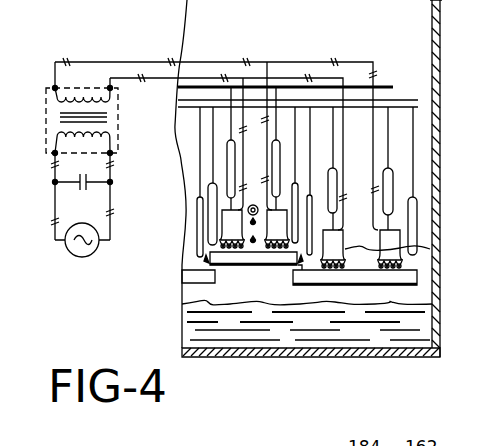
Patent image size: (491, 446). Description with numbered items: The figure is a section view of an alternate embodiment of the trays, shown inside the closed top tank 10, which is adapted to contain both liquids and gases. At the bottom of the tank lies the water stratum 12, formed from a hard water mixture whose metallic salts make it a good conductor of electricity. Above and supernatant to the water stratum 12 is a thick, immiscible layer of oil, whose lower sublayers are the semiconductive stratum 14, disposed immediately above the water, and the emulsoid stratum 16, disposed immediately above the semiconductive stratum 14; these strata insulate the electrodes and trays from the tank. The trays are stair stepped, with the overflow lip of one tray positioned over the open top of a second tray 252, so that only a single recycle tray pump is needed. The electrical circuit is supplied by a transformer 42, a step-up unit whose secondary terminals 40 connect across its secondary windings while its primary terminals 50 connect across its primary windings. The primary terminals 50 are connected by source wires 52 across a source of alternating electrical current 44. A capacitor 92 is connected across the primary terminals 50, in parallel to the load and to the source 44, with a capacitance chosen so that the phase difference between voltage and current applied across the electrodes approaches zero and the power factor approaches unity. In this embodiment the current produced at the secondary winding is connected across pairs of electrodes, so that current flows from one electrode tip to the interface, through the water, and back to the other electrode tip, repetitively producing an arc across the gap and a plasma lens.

The closed top tank 10 is at (440, 313).
The water stratum 12 is at (240, 345).
The semiconductive stratum 14 is at (418, 268).
The emulsoid stratum 16 is at (428, 190).
The secondary terminals 40 is at (108, 87).
The transformer 42 is at (118, 118).
The source of alternating electrical current 44 is at (96, 250).
The primary terminals 50 is at (83, 146).
The source wires 52 is at (53, 210).
The capacitor 92 is at (92, 178).
The second tray 252 is at (320, 286).